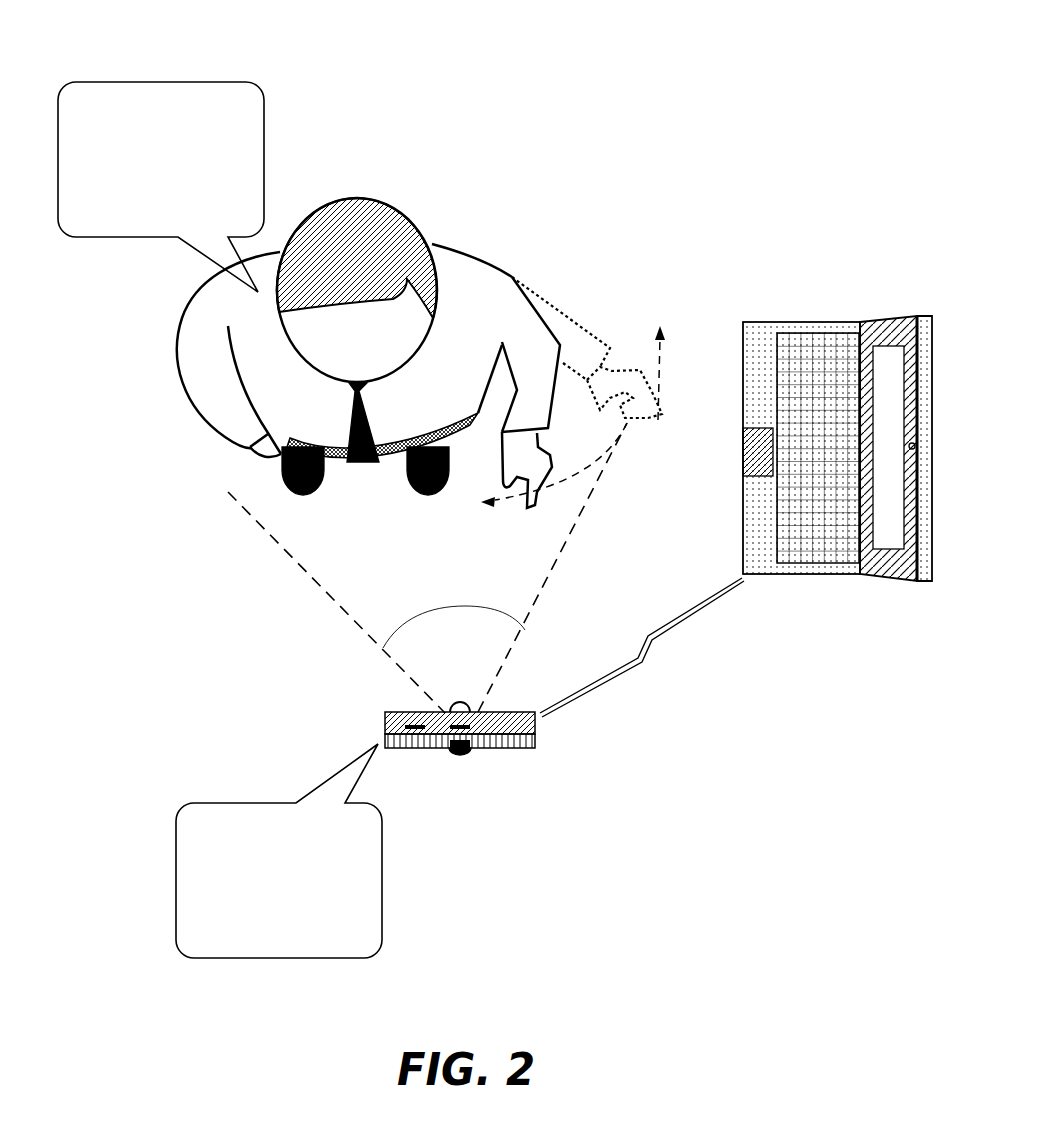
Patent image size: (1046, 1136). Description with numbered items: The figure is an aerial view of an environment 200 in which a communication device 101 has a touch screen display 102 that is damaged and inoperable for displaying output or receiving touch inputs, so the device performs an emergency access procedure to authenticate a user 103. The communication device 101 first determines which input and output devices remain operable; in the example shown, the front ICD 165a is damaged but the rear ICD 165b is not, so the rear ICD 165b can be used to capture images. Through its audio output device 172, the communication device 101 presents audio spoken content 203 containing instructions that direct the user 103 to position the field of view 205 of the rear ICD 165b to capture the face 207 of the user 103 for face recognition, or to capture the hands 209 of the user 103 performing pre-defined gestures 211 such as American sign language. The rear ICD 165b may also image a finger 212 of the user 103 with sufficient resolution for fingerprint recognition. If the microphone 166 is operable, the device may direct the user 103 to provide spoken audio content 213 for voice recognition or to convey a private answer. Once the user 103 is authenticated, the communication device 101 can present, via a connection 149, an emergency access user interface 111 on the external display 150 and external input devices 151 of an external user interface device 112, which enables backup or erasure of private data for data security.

The environment 200 is at (297, 48).
The user 103 is at (382, 395).
The face 207 is at (325, 353).
The hands 209 is at (270, 453).
The pre-defined gestures 211 is at (628, 336).
The finger 212 is at (528, 515).
The spoken audio content 213 is at (161, 187).
The audio spoken content 203 is at (279, 851).
The field of view 205 is at (415, 605).
The communication device 101 is at (448, 708).
The audio output device 172 is at (390, 732).
The microphone 166 is at (533, 728).
The touch screen display 102 is at (518, 752).
The front ICD 165a is at (460, 752).
The rear ICD 165b is at (468, 705).
The connection 149 is at (665, 645).
The external user interface device 112 is at (842, 452).
The external input devices 151 is at (791, 576).
The external display 150 is at (900, 463).
The emergency access user interface 111 is at (888, 355).